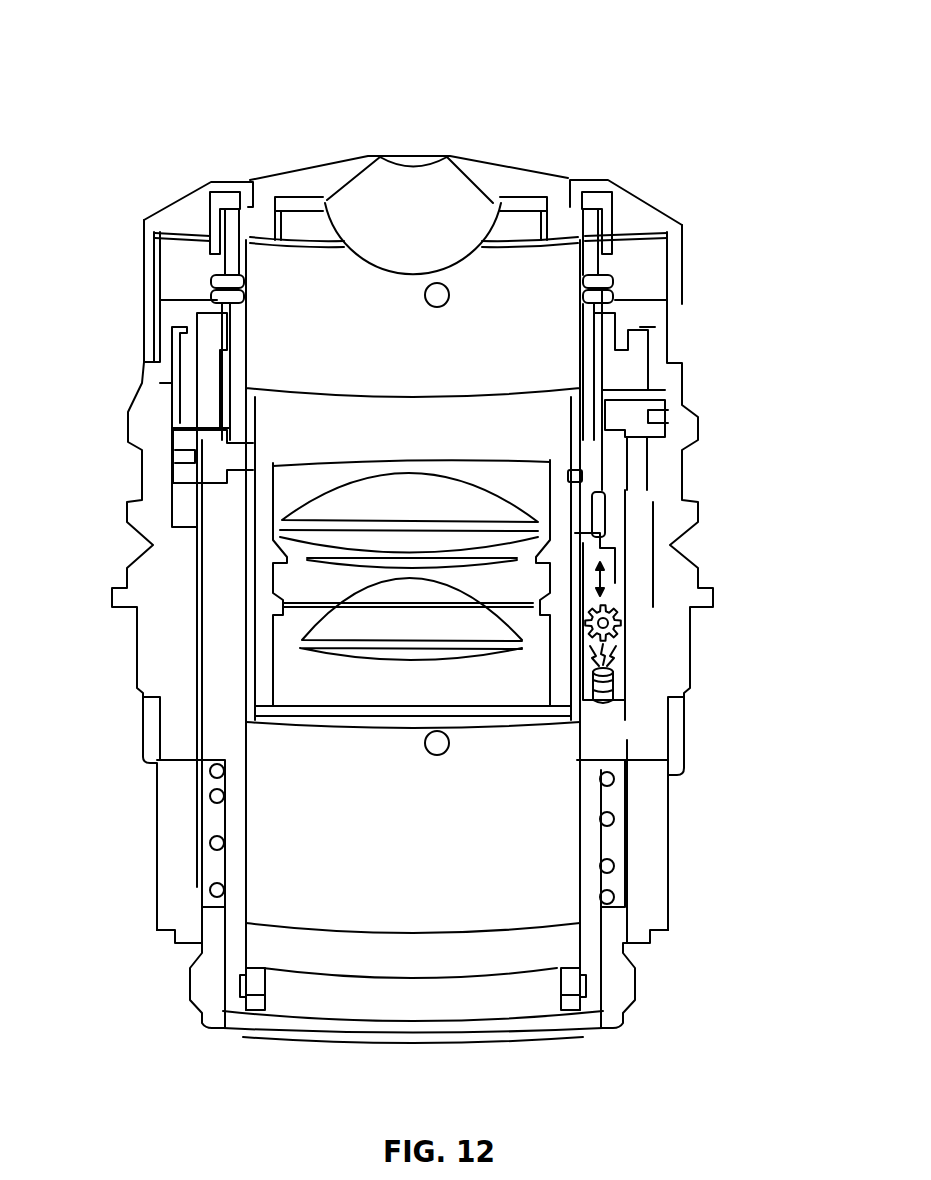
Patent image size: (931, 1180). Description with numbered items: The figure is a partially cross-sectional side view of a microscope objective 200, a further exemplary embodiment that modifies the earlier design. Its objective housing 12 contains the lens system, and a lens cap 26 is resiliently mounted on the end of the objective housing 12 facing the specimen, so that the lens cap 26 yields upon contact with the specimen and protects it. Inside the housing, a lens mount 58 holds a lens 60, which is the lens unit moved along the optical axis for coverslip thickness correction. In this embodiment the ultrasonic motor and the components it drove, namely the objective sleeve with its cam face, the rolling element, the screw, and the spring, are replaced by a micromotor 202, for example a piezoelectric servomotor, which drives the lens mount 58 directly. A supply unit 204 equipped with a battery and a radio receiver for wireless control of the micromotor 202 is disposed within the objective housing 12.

The microscope objective 200 is at (713, 80).
The lens cap 26 is at (633, 207).
The objective housing 12 is at (668, 830).
The lens mount 58 is at (555, 610).
The lens 60 is at (353, 628).
The micromotor 202 is at (607, 622).
The supply unit 204 is at (607, 686).